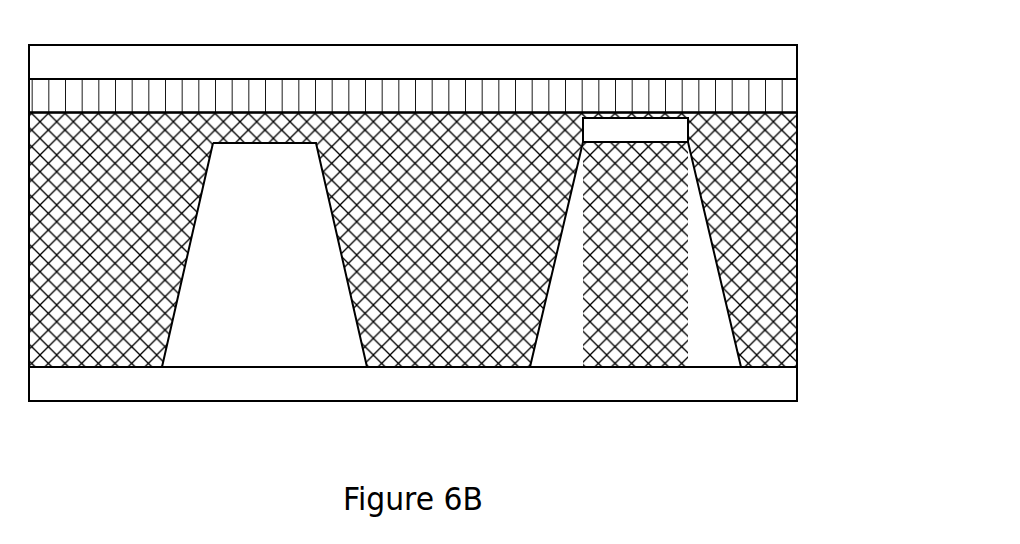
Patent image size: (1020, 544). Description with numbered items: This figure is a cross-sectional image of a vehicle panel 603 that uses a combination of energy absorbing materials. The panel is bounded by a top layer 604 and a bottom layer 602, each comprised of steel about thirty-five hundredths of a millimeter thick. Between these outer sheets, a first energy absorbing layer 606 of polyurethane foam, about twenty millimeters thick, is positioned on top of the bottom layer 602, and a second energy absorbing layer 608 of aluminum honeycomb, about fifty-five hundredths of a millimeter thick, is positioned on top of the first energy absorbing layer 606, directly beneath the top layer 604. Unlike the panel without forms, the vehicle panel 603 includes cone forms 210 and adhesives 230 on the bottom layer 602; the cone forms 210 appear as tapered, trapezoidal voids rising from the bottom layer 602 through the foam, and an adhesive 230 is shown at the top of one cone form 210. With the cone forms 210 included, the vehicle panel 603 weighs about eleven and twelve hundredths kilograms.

The bottom layer 602 is at (797, 385).
The top layer 604 is at (797, 63).
The first energy absorbing layer 606 is at (797, 302).
The second energy absorbing layer 608 is at (797, 92).
The cone forms 210 is at (706, 228).
The adhesives 230 is at (688, 133).
The vehicle panel 603 is at (432, 458).